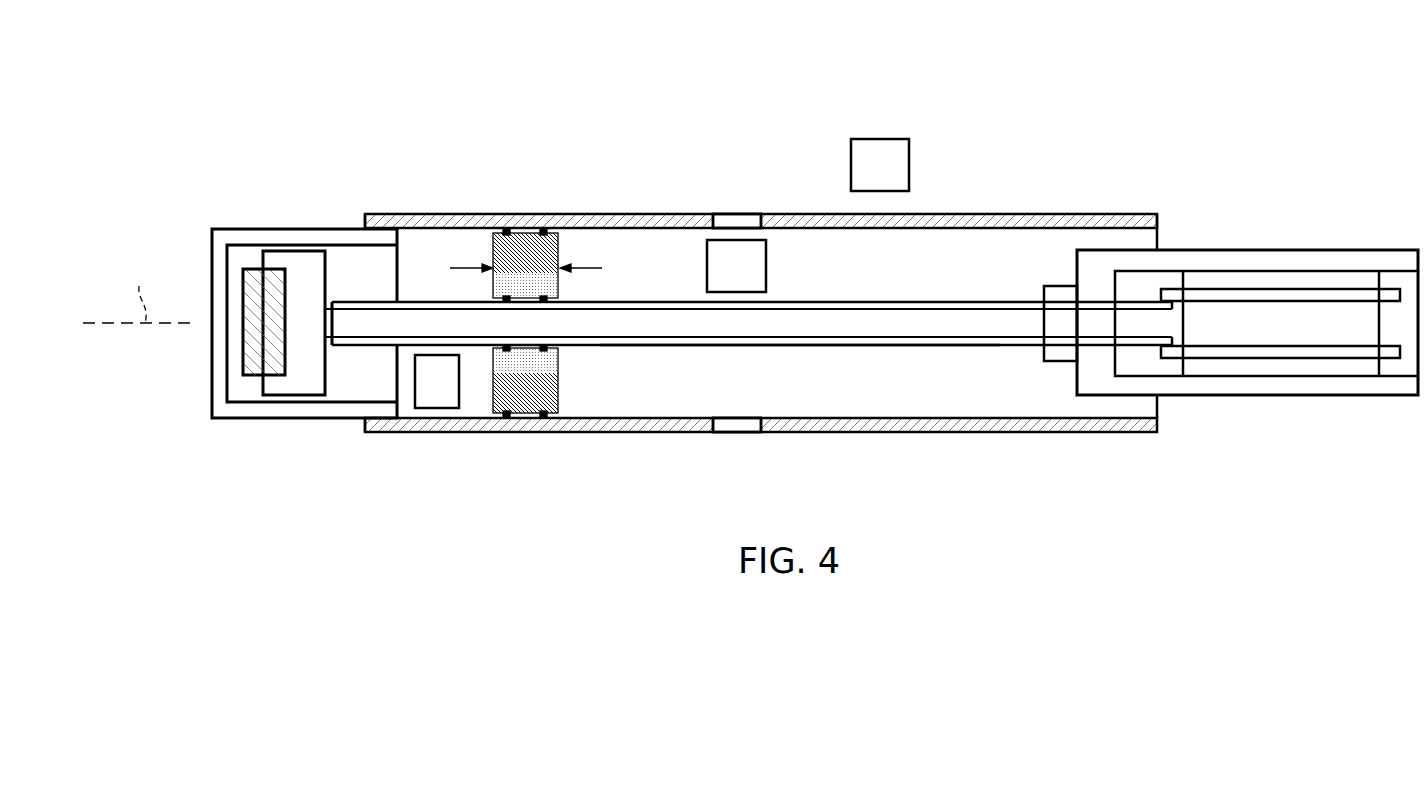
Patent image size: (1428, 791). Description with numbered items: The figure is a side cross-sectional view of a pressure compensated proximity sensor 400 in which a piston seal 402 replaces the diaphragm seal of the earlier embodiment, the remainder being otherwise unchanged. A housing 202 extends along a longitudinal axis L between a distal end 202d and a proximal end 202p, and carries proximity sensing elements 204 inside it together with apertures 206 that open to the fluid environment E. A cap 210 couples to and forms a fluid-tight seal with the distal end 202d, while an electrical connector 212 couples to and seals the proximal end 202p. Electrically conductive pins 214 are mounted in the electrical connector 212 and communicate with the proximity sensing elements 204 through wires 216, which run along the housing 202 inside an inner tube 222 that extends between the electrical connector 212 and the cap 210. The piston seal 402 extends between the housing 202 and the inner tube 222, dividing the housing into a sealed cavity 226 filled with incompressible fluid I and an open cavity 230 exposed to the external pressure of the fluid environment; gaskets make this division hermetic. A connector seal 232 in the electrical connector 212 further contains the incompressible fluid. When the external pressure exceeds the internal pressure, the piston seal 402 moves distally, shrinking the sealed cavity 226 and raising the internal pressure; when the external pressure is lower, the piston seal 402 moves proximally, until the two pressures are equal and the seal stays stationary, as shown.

The proximity sensor 400 is at (514, 91).
The housing 202 is at (1033, 213).
The distal end 202d is at (367, 185).
The proximal end 202p is at (1150, 185).
The proximity sensing elements 204 is at (252, 376).
The apertures 206 is at (740, 222).
The cap 210 is at (272, 229).
The electrical connector 212 is at (1277, 250).
The electrically conductive pins 214 is at (1293, 359).
The wires 216 is at (867, 338).
The inner tube 222 is at (998, 347).
The sealed cavity 226 is at (442, 409).
The open cavity 230 is at (923, 283).
The connector seal 232 is at (1135, 359).
The piston seal 402 is at (560, 388).